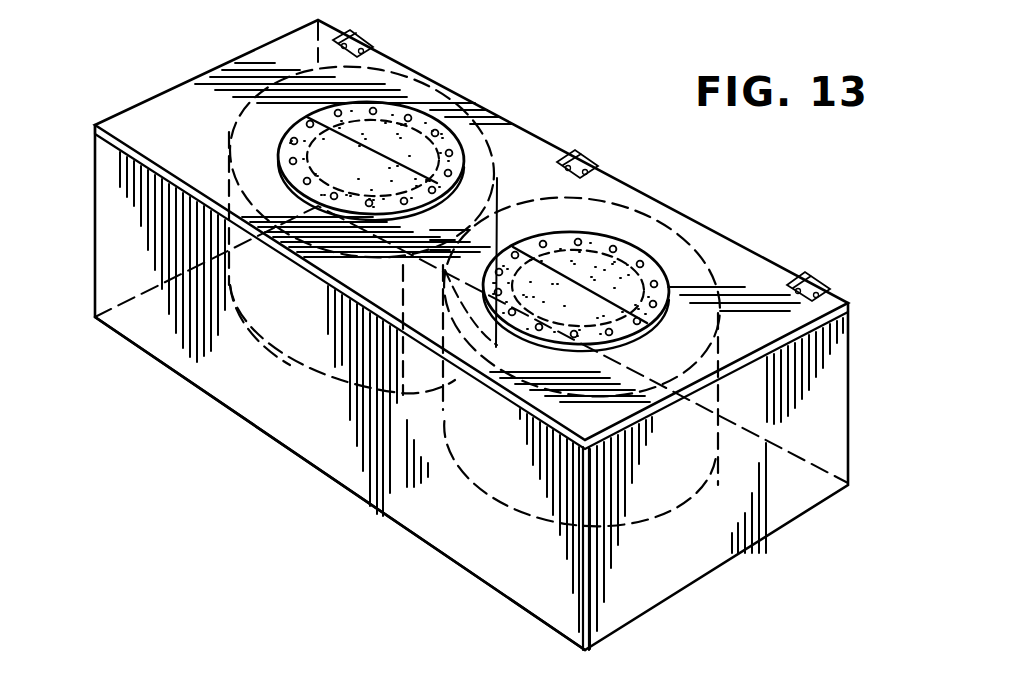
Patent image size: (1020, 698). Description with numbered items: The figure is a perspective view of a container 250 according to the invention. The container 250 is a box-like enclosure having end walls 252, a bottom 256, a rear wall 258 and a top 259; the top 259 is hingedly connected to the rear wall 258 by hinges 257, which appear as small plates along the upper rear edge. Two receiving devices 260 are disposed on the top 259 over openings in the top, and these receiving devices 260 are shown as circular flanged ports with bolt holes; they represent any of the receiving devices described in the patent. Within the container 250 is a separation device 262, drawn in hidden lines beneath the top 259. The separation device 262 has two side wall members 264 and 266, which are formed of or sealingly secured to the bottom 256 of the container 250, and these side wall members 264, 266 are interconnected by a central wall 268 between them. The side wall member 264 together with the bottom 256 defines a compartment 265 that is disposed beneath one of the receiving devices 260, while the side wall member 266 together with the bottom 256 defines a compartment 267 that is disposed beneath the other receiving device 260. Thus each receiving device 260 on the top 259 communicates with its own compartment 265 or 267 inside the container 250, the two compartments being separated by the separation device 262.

The container 250 is at (849, 378).
The end walls 252 is at (147, 124).
The bottom 256 is at (142, 327).
The hinges 257 is at (358, 33).
The rear wall 258 is at (495, 125).
The top 259 is at (708, 248).
The receiving devices 260 is at (410, 112).
The separation device 262 is at (440, 376).
The side wall member 264 is at (290, 360).
The compartment 265 is at (263, 312).
The side wall member 266 is at (510, 500).
The compartment 267 is at (490, 453).
The central wall 268 is at (497, 230).